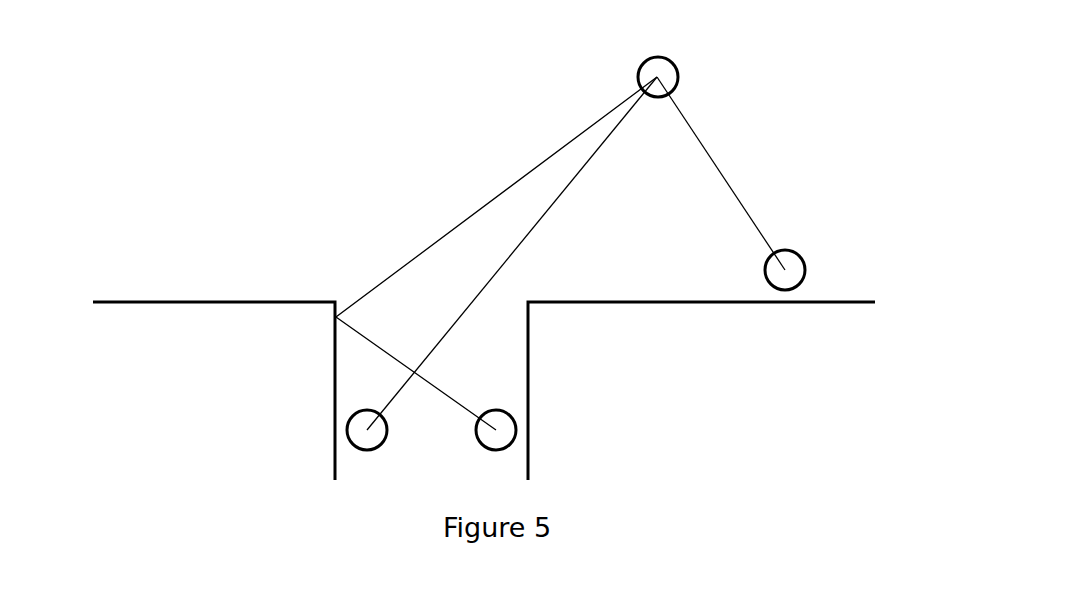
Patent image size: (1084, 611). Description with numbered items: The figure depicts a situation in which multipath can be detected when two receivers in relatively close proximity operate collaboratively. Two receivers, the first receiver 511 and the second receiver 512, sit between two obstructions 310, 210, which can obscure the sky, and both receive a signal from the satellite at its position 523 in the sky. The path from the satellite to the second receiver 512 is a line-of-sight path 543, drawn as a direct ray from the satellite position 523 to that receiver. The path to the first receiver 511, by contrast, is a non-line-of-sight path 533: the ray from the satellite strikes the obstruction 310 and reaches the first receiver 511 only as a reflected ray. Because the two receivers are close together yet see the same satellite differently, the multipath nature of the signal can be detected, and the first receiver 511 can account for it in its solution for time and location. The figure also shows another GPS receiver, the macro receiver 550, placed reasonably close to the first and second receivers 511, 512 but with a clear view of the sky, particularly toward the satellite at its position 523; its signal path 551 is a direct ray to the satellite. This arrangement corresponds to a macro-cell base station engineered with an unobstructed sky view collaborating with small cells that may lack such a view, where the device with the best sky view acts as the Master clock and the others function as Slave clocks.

The obstruction 310 is at (333, 430).
The obstruction 210 is at (531, 367).
The satellite SV-N position 523 is at (630, 72).
The receiver REC-2 512 is at (385, 443).
The receiver REC-1 511 is at (485, 443).
The GPS receiver REC-M 550 is at (820, 267).
The non-line-of-sight path 533 is at (371, 337).
The line-of-sight path 543 is at (512, 253).
The range RM_N(t) 551 is at (721, 173).